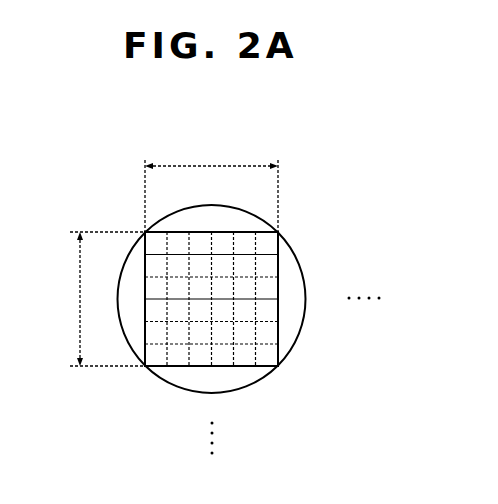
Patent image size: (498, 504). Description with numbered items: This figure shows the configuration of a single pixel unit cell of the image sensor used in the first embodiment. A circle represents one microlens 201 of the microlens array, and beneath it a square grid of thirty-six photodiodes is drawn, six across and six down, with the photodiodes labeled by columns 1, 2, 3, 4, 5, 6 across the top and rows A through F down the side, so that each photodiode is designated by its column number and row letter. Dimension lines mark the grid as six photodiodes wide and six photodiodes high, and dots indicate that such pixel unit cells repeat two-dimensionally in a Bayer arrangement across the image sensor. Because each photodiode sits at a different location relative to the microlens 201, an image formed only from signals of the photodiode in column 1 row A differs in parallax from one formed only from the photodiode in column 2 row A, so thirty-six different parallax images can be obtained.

The microlens 201 is at (222, 301).
The photodiode column 1 is at (152, 270).
The photodiode column 2 is at (174, 270).
The photodiode column 3 is at (196, 270).
The photodiode column 4 is at (219, 270).
The photodiode column 5 is at (241, 270).
The photodiode column 6 is at (171, 256).